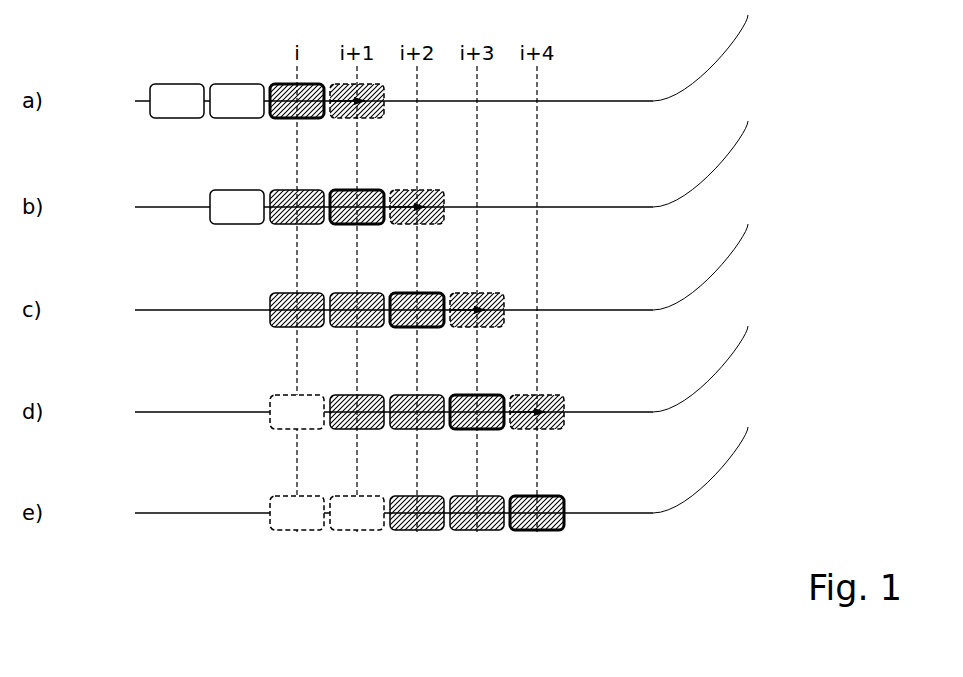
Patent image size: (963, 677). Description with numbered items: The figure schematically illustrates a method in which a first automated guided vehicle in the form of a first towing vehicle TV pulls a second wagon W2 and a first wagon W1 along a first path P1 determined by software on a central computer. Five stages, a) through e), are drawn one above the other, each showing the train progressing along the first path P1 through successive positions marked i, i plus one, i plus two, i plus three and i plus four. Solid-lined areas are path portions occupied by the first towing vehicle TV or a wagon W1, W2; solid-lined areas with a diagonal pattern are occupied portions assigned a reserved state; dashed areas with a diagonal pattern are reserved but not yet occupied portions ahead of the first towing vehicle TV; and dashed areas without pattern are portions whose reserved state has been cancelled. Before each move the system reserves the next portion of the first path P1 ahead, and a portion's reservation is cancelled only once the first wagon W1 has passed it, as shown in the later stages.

The first wagon W1 is at (297, 307).
The second wagon W2 is at (357, 307).
The first towing vehicle TV is at (417, 307).
The first path P1 is at (441, 314).